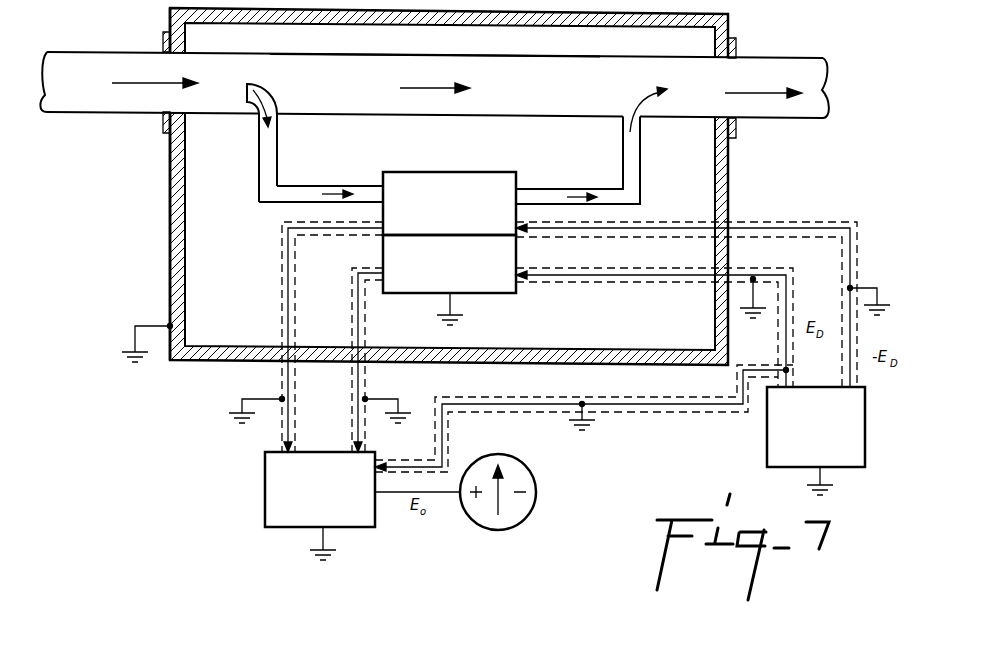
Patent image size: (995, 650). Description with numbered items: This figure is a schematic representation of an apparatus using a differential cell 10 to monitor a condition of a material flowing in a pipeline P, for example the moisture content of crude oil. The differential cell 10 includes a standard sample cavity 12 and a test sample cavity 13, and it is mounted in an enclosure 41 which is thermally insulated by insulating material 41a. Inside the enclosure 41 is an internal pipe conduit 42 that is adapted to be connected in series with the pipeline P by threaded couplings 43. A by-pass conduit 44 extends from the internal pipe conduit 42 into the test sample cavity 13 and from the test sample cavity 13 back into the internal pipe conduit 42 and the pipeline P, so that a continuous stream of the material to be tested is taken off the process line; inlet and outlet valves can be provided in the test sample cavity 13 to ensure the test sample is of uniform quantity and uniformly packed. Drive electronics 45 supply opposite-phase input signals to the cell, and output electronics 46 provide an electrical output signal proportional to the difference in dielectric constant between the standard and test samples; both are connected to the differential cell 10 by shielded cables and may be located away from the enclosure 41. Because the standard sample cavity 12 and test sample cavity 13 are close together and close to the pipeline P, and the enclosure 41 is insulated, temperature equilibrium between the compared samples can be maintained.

The differential cell 10 is at (464, 164).
The standard sample cavity 12 is at (492, 293).
The test sample cavity 13 is at (516, 172).
The enclosure 41 is at (446, 186).
The insulating material 41a is at (170, 193).
The internal pipe conduit 42 is at (553, 56).
The threaded couplings 43 is at (165, 42).
The by-pass conduit 44 is at (277, 147).
The drive electronics 45 is at (767, 440).
The output electronics 46 is at (355, 527).
The pipeline P is at (434, 69).